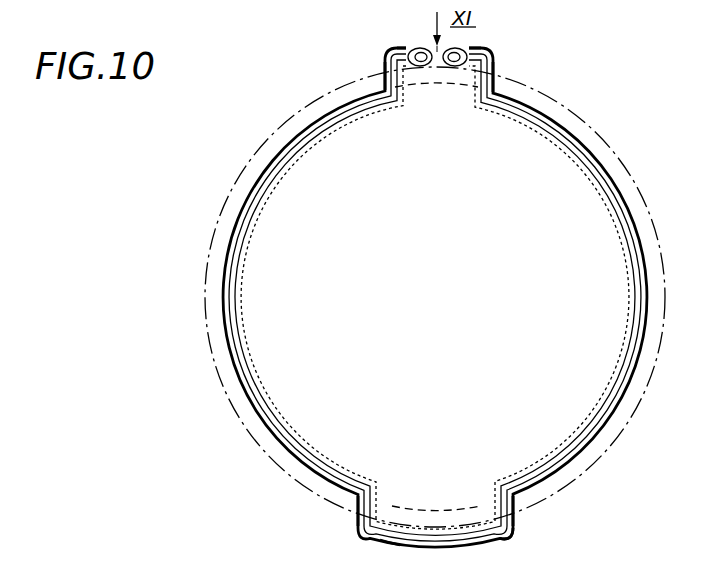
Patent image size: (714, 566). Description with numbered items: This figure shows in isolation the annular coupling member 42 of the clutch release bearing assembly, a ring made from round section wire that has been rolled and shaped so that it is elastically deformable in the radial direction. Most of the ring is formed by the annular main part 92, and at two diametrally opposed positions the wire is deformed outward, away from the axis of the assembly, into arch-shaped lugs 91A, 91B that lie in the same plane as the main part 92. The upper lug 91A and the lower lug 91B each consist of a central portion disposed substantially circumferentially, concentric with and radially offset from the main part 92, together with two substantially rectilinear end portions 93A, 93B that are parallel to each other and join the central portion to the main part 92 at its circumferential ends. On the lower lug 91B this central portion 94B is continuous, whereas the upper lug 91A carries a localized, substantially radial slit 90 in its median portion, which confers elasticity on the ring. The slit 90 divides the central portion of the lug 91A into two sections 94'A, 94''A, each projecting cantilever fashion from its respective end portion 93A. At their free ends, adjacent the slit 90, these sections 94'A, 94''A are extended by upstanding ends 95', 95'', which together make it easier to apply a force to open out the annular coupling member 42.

The annular coupling member 42 is at (582, 128).
The slit 90 is at (443, 50).
The lug 91A is at (508, 63).
The lug 91B is at (519, 542).
The annular main part 92 is at (230, 301).
The end portions 93A is at (386, 78).
The end portions 93B is at (362, 508).
The section of central portion 94'A is at (384, 37).
The section of central portion 94''A is at (513, 42).
The central portion 94B is at (395, 537).
The upstanding end 95' is at (420, 85).
The upstanding end 95'' is at (461, 85).